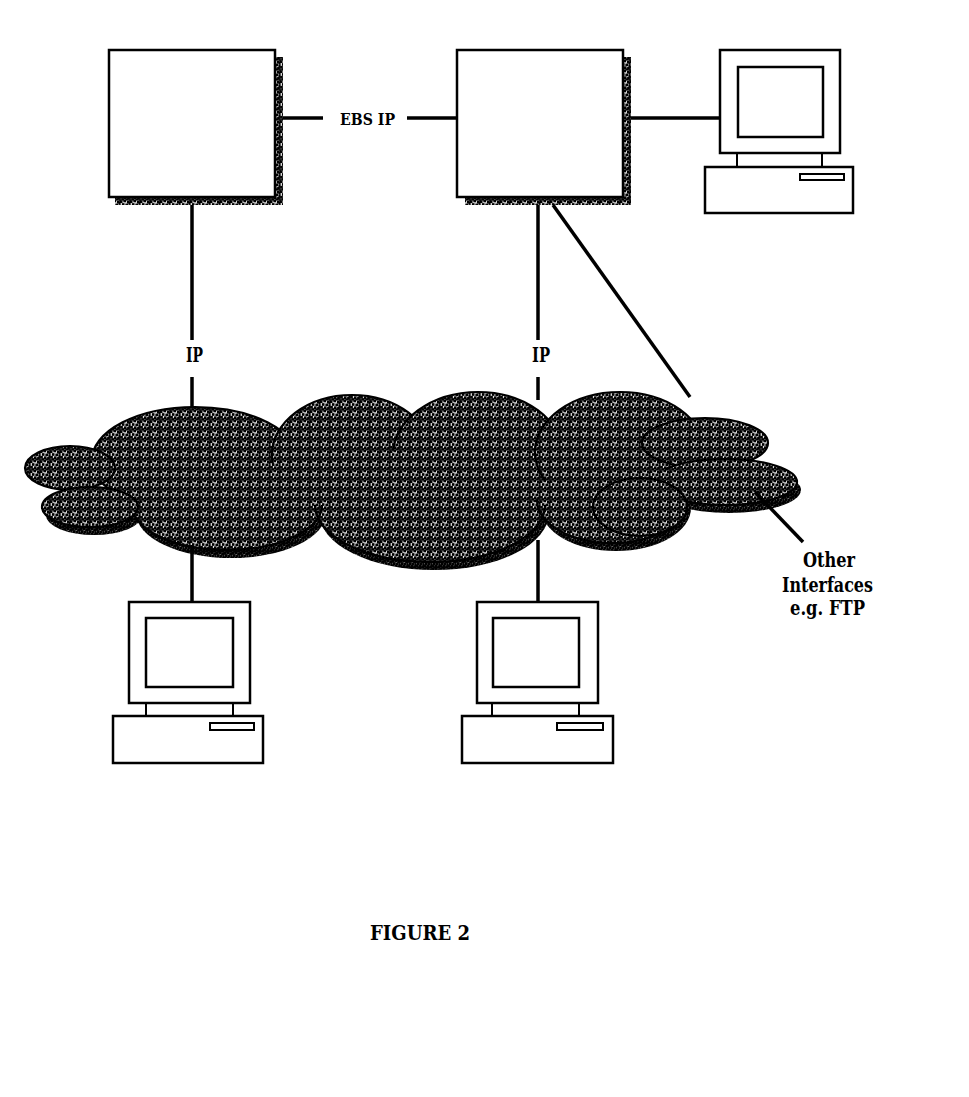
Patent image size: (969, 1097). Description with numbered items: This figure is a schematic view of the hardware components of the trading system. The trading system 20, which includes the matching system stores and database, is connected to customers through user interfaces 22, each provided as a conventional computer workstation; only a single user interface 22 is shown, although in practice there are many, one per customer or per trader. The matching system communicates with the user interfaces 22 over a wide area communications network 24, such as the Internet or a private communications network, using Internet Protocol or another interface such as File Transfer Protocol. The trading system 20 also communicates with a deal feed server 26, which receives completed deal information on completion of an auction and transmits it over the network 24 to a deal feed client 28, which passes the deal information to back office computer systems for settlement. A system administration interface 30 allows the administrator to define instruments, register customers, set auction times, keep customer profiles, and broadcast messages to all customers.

The trading system 20 is at (573, 49).
The user interface 22 is at (472, 633).
The wide area communications network 24 is at (660, 530).
The deal feed server 26 is at (173, 49).
The deal feed client 28 is at (125, 633).
The system administration interface 30 is at (738, 213).